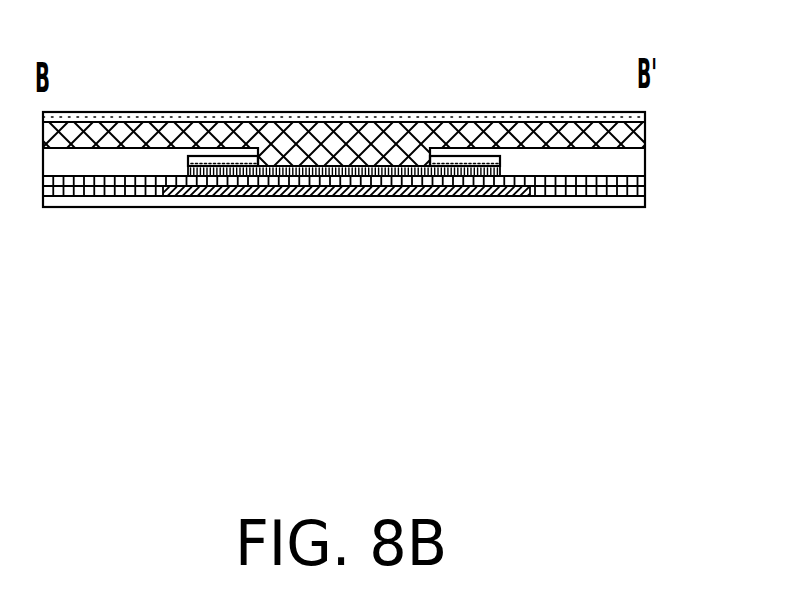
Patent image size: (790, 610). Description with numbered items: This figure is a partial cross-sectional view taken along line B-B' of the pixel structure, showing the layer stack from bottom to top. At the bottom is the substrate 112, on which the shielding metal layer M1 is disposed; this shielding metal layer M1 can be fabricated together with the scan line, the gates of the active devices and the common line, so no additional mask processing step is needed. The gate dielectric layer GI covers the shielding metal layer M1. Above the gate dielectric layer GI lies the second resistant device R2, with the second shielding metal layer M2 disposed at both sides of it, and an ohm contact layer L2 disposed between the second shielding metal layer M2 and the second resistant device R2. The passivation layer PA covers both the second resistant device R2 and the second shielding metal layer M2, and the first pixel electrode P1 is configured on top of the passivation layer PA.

The first pixel electrode P1 is at (520, 113).
The passivation layer PA is at (628, 142).
The second shielding metal layer M2 is at (612, 162).
The gate dielectric layer GI is at (645, 187).
The substrate 112 is at (605, 202).
The shielding metal layer M1 is at (330, 197).
The second resistant device R2 is at (435, 172).
The ohm contact layer L2 is at (503, 163).